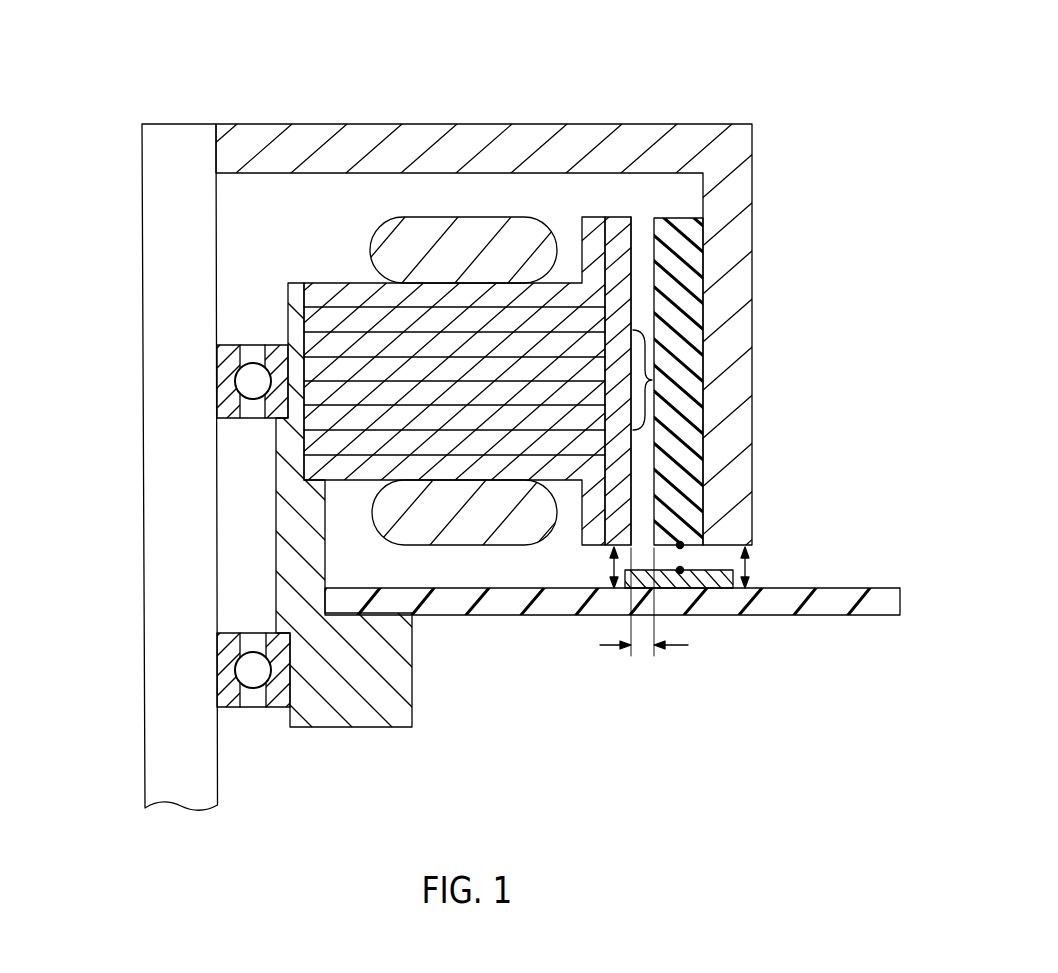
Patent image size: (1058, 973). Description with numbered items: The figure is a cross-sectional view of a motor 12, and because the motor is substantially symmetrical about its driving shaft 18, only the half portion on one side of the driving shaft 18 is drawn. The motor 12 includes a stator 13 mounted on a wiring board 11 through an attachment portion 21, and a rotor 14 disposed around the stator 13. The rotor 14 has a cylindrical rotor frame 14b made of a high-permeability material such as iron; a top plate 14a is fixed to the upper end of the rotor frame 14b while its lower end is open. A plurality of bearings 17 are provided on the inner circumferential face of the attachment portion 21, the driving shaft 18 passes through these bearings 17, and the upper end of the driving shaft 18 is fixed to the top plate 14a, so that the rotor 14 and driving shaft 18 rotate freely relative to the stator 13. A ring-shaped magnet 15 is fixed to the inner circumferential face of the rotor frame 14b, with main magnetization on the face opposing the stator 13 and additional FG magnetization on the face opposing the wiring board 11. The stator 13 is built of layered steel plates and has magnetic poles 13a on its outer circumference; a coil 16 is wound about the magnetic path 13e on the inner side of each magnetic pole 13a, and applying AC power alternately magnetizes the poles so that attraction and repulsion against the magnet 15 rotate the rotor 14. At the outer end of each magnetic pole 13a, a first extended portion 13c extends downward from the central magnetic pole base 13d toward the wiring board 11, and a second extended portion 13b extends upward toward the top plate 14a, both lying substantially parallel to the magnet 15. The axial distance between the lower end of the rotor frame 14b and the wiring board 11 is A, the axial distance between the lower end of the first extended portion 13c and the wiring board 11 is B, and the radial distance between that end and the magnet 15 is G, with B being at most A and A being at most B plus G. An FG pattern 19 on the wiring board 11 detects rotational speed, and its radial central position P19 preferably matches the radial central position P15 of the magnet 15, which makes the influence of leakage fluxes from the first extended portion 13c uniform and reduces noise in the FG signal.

The motor 12 is at (113, 62).
The driving shaft 18 is at (178, 134).
The rotor 14 is at (752, 183).
The top plate 14a is at (508, 131).
The rotor frame 14b is at (733, 305).
The stator 13 is at (490, 433).
The magnetic path 13e is at (360, 342).
The magnetic pole 13a is at (583, 478).
The second extended portion 13b is at (615, 228).
The first extended portion 13c is at (632, 488).
The magnetic pole base 13d is at (652, 381).
The attachment portion 21 is at (363, 716).
The coil 16 is at (438, 228).
The magnet 15 is at (687, 259).
The central position of the magnet P15 is at (681, 544).
The bearings 17 is at (223, 383).
The wiring board 11 is at (823, 606).
The FG pattern 19 is at (720, 586).
The central position of the FG pattern P19 is at (680, 574).
The distance G is at (645, 657).
The distance B is at (611, 571).
The distance A is at (748, 567).